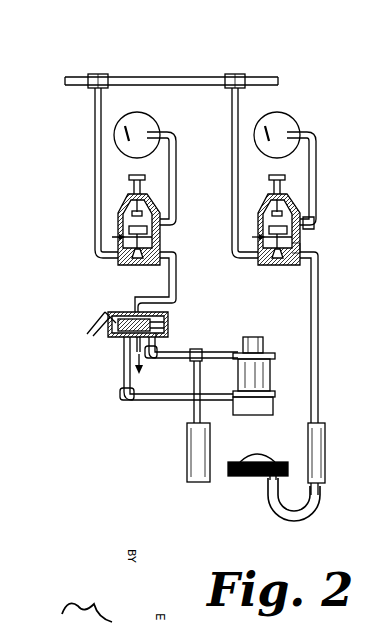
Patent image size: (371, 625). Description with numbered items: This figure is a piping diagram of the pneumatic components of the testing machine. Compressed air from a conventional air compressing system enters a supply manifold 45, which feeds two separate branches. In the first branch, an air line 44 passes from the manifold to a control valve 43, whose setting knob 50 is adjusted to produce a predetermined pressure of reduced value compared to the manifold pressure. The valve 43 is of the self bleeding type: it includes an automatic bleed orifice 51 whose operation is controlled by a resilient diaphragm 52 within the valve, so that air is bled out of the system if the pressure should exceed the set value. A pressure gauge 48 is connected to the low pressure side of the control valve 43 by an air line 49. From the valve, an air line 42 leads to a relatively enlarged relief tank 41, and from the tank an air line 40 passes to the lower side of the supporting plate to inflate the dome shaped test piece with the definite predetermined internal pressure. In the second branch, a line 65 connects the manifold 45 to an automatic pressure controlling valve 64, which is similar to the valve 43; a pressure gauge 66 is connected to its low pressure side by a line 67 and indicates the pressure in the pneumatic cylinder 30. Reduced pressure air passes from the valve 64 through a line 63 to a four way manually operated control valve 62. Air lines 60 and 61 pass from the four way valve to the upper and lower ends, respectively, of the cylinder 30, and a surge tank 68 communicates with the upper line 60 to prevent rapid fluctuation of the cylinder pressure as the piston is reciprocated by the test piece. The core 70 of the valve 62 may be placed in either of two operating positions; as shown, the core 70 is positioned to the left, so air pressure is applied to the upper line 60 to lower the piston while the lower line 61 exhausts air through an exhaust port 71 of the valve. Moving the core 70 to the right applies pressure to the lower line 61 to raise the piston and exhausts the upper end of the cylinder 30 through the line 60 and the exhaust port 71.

The pneumatic cylinder 30 is at (259, 380).
The air line 40 is at (305, 516).
The relief tank 41 is at (319, 454).
The air line 42 is at (319, 357).
The control valve 43 is at (313, 225).
The air line 44 is at (232, 120).
The supply manifold 45 is at (172, 76).
The pressure gauge 48 is at (284, 126).
The air line 49 is at (318, 171).
The setting knob 50 is at (271, 182).
The automatic bleed orifice 51 is at (256, 236).
The resilient diaphragm 52 is at (301, 247).
The air line 60 is at (218, 350).
The air line 61 is at (210, 396).
The four way manually operated control valve 62 is at (169, 328).
The line 63 is at (178, 279).
The automatic pressure controlling valve 64 is at (118, 190).
The line 65 is at (95, 173).
The pressure gauge 66 is at (148, 126).
The line 67 is at (176, 170).
The surge tank 68 is at (192, 456).
The core 70 is at (108, 336).
The exhaust port 71 is at (145, 352).